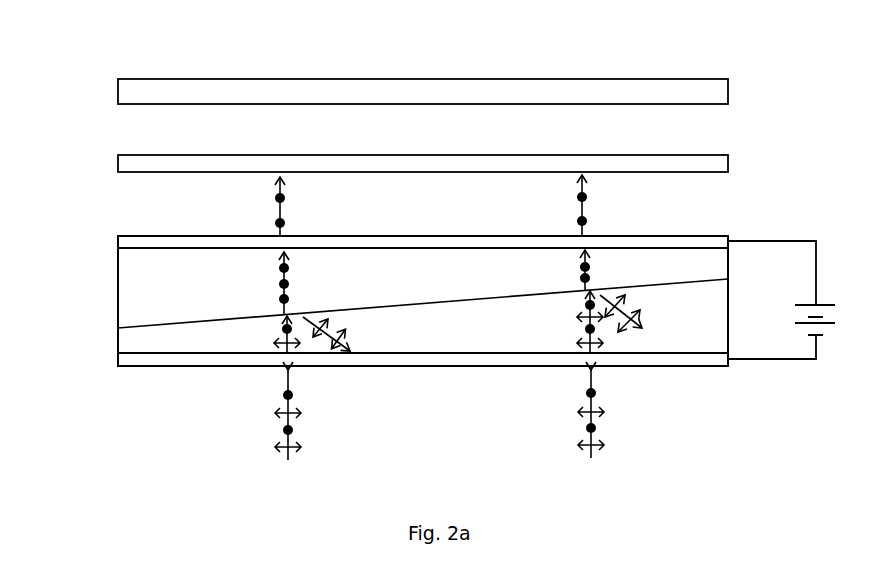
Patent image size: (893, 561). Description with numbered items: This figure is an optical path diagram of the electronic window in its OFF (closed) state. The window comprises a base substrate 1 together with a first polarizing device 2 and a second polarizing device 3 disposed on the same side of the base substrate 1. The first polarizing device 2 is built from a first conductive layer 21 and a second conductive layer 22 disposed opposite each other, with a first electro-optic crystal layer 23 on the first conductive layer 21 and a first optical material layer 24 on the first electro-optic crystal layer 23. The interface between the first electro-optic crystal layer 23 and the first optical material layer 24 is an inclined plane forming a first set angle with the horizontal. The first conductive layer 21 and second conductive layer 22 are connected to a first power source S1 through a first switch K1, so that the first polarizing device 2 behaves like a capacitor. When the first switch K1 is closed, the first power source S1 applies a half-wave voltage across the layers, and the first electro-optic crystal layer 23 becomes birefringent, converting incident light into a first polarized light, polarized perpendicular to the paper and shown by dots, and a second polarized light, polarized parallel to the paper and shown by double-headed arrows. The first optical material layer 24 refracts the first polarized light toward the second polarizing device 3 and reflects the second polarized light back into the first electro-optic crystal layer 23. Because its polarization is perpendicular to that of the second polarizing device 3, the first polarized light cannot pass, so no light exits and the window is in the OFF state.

The base substrate 1 is at (693, 94).
The second polarizing device 3 is at (130, 168).
The first polarizing device 2 is at (379, 285).
The second conductive layer 22 is at (132, 245).
The first optical material layer 24 is at (127, 297).
The first electro-optic crystal layer 23 is at (125, 340).
The first conductive layer 21 is at (393, 345).
The first switch K1 is at (772, 283).
The first power source S1 is at (829, 320).